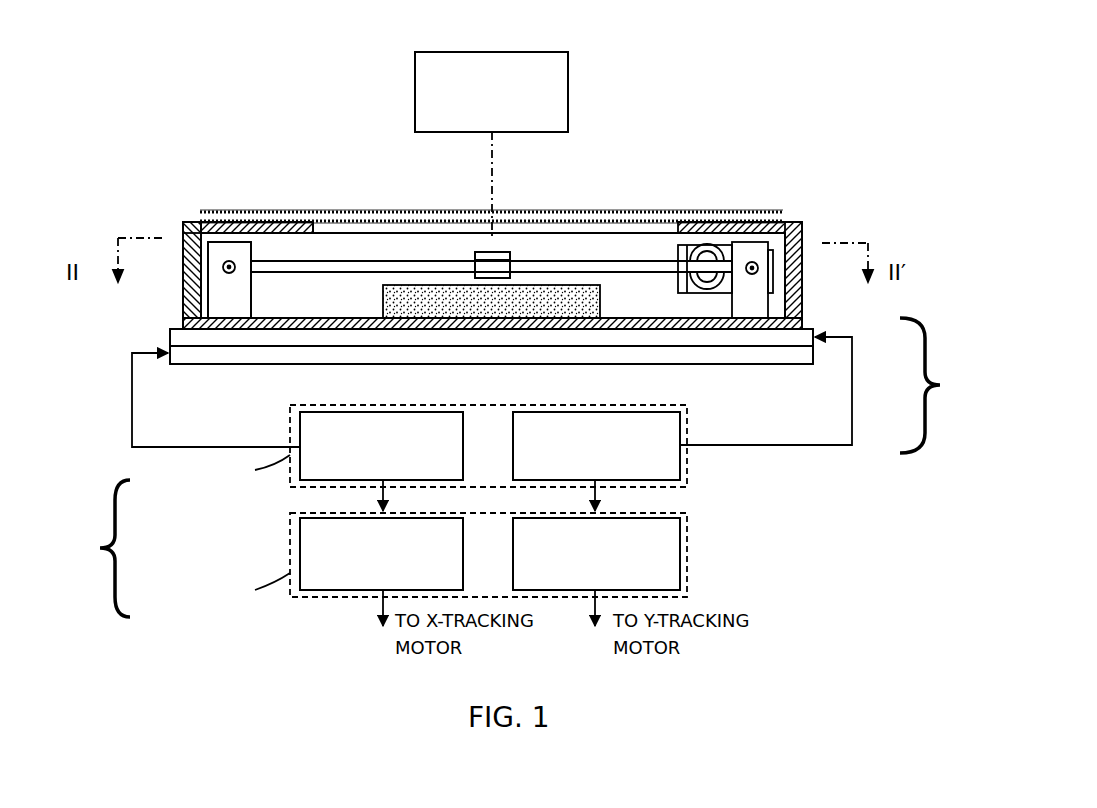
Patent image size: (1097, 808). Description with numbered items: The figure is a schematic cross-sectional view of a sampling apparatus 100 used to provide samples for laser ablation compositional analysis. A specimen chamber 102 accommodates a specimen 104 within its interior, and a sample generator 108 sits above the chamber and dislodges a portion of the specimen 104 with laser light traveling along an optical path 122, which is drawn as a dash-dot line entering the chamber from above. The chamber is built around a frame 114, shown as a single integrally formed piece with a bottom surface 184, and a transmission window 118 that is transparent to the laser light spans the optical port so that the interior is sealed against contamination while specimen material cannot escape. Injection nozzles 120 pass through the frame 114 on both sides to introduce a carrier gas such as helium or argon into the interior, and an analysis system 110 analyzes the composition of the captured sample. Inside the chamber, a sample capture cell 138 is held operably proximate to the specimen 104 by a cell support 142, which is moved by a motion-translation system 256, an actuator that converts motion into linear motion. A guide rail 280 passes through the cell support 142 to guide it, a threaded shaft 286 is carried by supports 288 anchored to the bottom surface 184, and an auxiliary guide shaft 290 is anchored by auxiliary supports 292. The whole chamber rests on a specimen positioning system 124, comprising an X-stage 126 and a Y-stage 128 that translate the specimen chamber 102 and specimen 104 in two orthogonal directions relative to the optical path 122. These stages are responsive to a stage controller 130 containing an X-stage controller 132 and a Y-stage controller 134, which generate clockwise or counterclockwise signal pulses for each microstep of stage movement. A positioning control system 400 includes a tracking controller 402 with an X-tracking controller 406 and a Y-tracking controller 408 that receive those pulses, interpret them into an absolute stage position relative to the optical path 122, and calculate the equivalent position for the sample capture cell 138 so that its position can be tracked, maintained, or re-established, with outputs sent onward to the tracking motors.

The sampling apparatus 100 is at (697, 109).
The specimen chamber 102 is at (794, 217).
The specimen 104 is at (415, 283).
The sample generator 108 is at (548, 52).
The analysis system 110 is at (563, 227).
The frame 114 is at (185, 228).
The transmission window 118 is at (532, 210).
The injection nozzle 120 is at (183, 278).
The optical path 122 is at (493, 172).
The specimen positioning system 124 is at (918, 457).
The X-stage 126 is at (815, 352).
The Y-stage 128 is at (170, 337).
The stage controller 130 is at (687, 465).
The X-stage controller 132 is at (297, 440).
The Y-stage controller 134 is at (683, 437).
The sample capture cell 138 is at (478, 252).
The cell support 142 is at (516, 253).
The bottom surface 184 is at (357, 317).
The motion-translation system 256 is at (709, 243).
The guide rail 280 is at (321, 258).
The threaded shaft 286 is at (755, 274).
The support 288 is at (762, 256).
The auxiliary guide shaft 290 is at (229, 273).
The auxiliary support 292 is at (222, 242).
The positioning control system 400 is at (115, 613).
The tracking controller 402 is at (687, 533).
The X-tracking controller 406 is at (350, 590).
The Y-tracking controller 408 is at (683, 567).